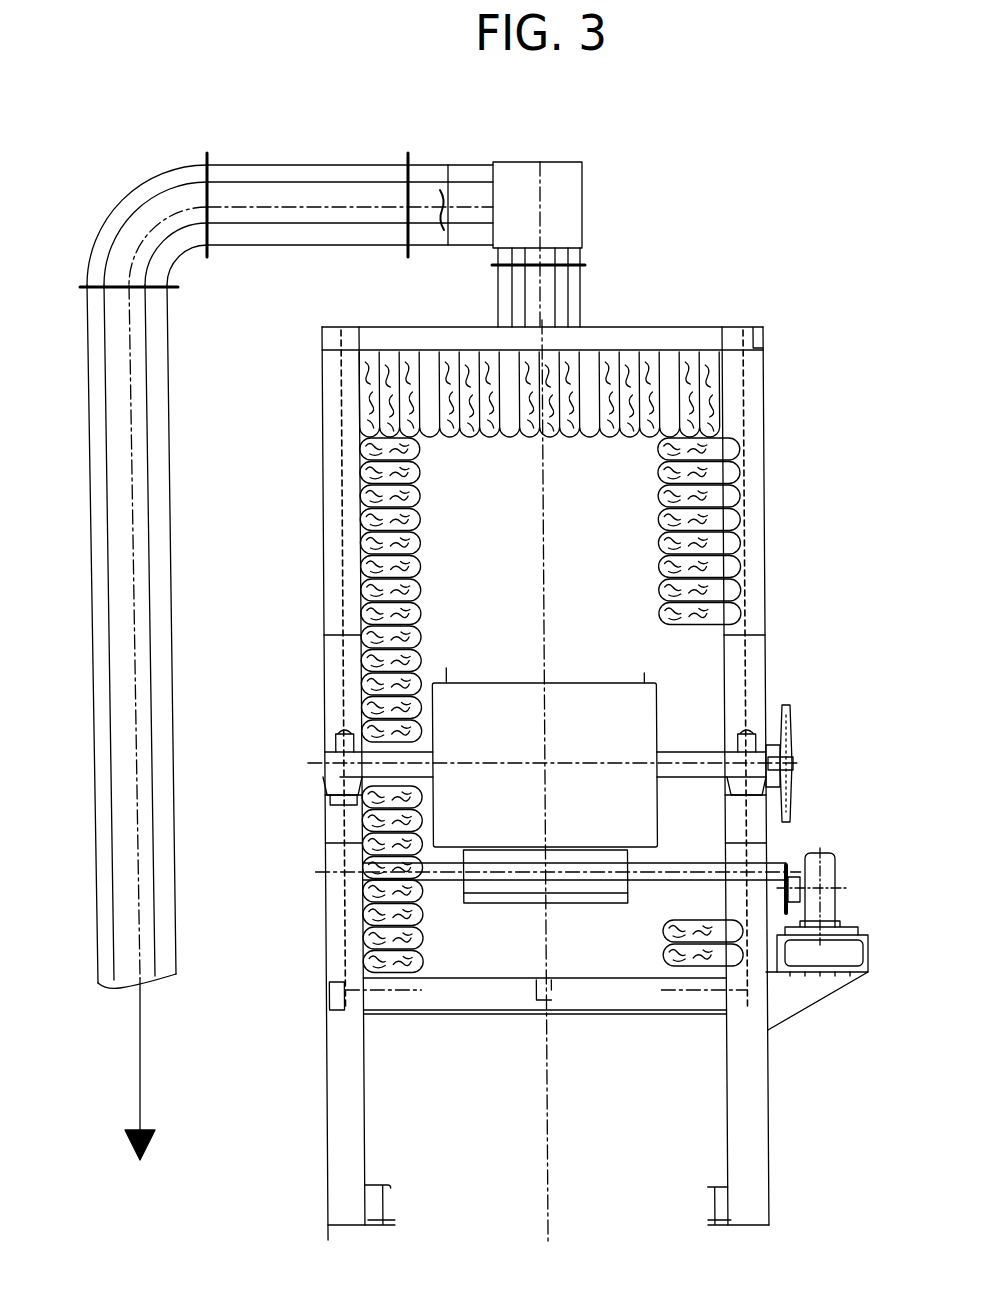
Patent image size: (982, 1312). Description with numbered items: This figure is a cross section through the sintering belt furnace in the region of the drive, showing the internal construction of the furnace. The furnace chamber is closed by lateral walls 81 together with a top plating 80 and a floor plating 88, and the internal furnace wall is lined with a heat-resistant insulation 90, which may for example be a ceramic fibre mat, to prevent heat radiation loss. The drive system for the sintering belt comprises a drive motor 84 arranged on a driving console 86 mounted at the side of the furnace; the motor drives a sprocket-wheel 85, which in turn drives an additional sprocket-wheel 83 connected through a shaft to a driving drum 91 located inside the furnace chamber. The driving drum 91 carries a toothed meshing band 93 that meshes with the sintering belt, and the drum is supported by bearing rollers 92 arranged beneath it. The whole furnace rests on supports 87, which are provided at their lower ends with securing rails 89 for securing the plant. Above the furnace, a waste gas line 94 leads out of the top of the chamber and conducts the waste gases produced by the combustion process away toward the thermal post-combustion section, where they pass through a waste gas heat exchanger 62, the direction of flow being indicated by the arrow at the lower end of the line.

The waste gas heat exchanger 62 is at (140, 1091).
The top plating 80 is at (635, 327).
The lateral walls 81 is at (755, 473).
The additional sprocket-wheel 83 is at (785, 740).
The drive motor 84 is at (832, 880).
The sprocket-wheel 85 is at (787, 865).
The driving console 86 is at (790, 1010).
The supports 87 is at (760, 1123).
The floor plating 88 is at (600, 1015).
The securing rails 89 is at (385, 1185).
The heat-resistant insulation 90 is at (665, 497).
The driving drum 91 is at (625, 715).
The bearing rollers 92 is at (590, 885).
The toothed meshing band 93 is at (645, 673).
The waste gas line 94 is at (305, 195).